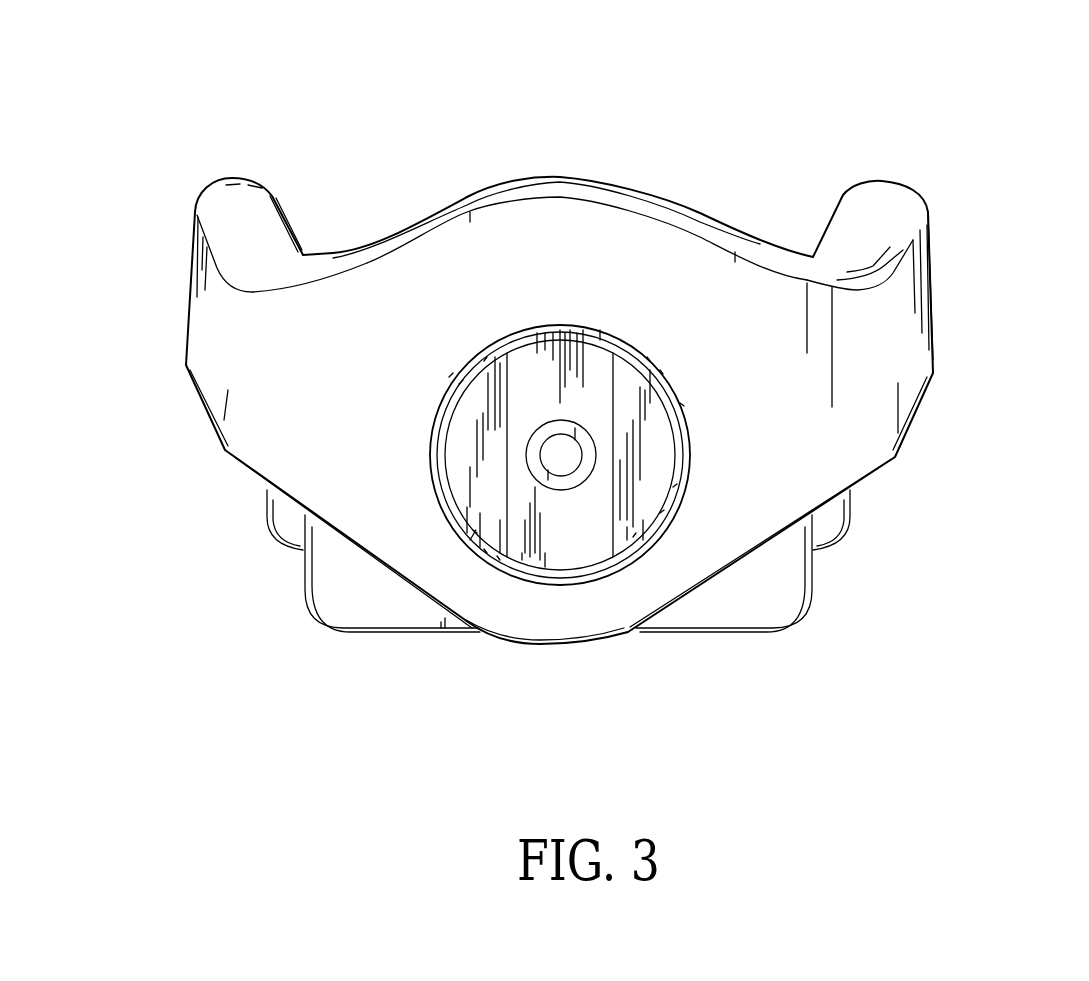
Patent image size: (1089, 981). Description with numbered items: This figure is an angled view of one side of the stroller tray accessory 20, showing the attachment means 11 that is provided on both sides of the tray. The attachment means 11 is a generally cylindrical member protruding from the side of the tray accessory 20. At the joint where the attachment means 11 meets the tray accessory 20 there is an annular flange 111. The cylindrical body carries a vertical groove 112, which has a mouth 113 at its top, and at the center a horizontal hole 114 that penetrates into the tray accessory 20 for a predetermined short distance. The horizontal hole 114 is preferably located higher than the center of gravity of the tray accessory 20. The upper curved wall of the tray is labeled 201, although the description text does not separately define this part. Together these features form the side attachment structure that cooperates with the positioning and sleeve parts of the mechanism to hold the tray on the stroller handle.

The tray accessory 20 is at (935, 145).
The curved top wall of bracket 201 is at (618, 150).
The attachment means 11 is at (540, 418).
The annular flange 111 is at (473, 535).
The vertical groove 112 is at (533, 347).
The mouth 113 is at (593, 342).
The horizontal hole 114 is at (562, 463).